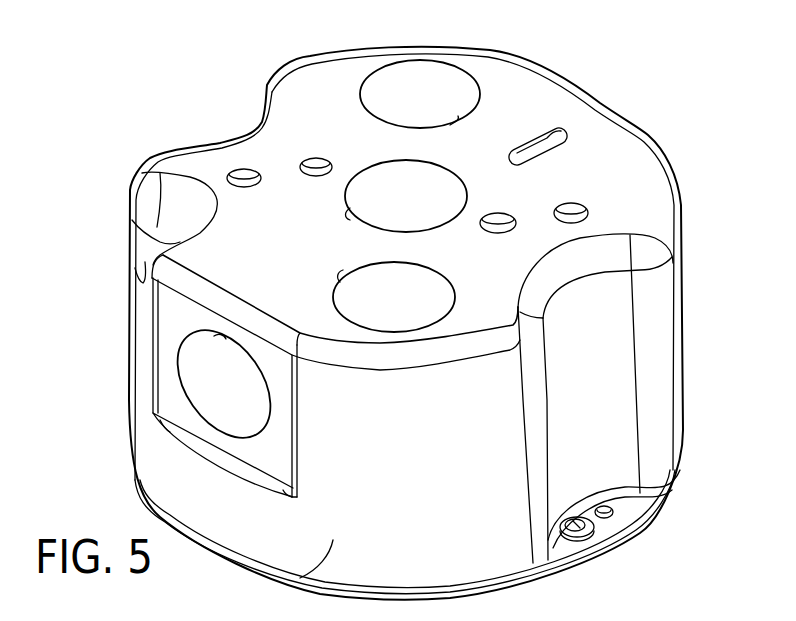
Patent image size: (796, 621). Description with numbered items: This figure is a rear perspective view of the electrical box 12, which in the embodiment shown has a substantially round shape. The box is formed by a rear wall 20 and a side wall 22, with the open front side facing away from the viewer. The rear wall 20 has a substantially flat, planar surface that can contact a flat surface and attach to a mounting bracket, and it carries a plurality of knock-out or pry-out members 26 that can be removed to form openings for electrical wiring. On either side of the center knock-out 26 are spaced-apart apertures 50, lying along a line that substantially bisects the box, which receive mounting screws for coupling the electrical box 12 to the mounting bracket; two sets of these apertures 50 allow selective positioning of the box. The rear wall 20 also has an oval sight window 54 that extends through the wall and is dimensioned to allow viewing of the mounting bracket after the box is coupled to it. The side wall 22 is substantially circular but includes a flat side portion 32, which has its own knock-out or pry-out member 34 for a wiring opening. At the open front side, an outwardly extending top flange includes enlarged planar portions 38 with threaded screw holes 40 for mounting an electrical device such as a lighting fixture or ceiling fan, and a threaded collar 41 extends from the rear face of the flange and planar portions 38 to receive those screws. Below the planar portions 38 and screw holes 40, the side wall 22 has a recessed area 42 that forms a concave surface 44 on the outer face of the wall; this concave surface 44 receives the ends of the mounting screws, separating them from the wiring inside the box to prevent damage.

The electrical box 12 is at (617, 80).
The rear wall 20 is at (510, 97).
The side wall 22 is at (287, 583).
The knock-out or pry-out members 26 is at (370, 163).
The flat side portion 32 is at (172, 313).
The knock-out or pry-out member 34 is at (187, 387).
The enlarged planar portions 38 is at (630, 510).
The threaded screw holes 40 is at (598, 524).
The threaded collar 41 is at (577, 541).
The recessed area 42 is at (620, 376).
The concave surface 44 is at (620, 437).
The apertures 50 is at (317, 160).
The sight window 54 is at (575, 137).